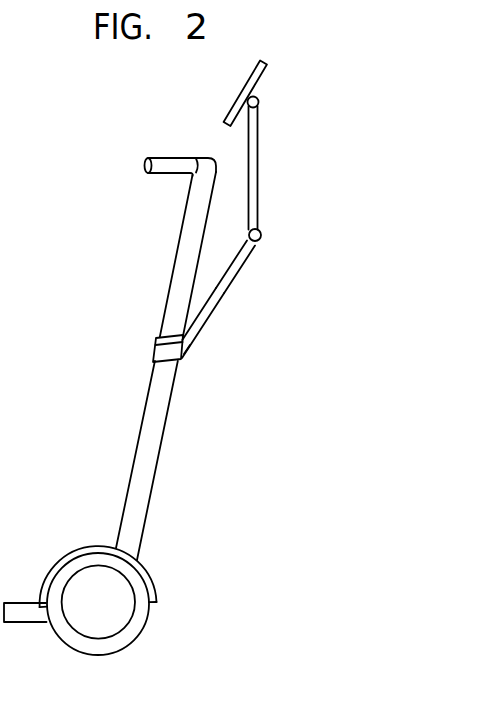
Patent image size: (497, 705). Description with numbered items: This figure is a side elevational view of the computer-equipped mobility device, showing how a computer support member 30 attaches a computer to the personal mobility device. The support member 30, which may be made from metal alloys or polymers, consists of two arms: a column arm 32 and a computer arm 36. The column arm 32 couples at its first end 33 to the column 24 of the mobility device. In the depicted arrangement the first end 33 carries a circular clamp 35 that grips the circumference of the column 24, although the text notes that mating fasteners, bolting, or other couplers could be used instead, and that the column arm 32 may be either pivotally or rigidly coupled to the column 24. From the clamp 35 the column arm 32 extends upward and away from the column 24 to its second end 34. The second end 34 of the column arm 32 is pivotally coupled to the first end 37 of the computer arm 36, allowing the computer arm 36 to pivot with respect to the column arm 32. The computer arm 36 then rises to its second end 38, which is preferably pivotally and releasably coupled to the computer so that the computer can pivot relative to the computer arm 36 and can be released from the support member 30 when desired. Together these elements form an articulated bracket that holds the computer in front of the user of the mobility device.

The column 24 is at (139, 449).
The computer support member 30 is at (280, 220).
The column arm 32 is at (213, 306).
The first end 33 is at (192, 340).
The second end 34 is at (239, 266).
The circular clamp 35 is at (154, 349).
The computer arm 36 is at (252, 178).
The first end 37 is at (258, 220).
The second end 38 is at (256, 115).